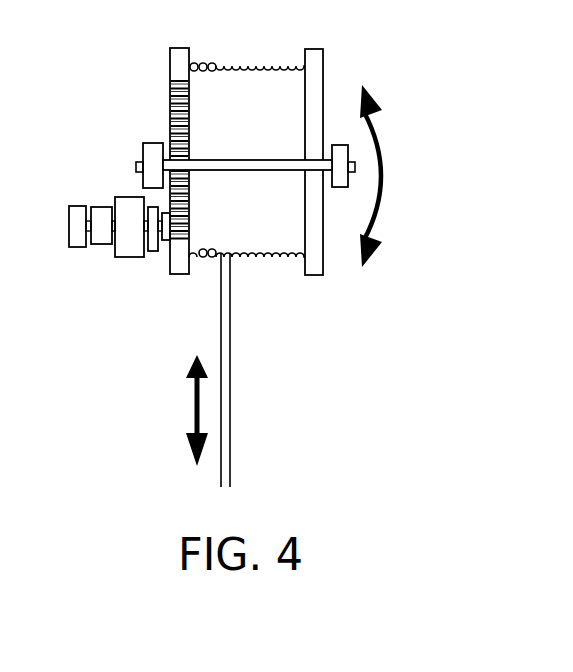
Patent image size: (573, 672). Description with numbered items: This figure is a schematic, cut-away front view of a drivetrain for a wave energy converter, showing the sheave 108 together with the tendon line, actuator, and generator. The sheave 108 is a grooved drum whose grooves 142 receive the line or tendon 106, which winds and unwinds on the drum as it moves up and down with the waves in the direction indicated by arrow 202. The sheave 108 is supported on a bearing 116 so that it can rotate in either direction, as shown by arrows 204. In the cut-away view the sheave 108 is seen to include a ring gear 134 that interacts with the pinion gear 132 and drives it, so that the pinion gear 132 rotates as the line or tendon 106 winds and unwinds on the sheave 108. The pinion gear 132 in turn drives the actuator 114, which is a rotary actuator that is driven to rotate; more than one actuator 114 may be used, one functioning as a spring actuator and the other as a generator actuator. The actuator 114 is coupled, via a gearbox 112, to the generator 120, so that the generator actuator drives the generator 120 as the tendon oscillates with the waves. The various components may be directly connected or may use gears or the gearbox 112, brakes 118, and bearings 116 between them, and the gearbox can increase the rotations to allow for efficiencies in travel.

The line or tendon 106 is at (214, 65).
The sheave 108 is at (323, 58).
The gearbox 112 is at (103, 236).
The actuator 114 is at (130, 200).
The bearing 116 is at (148, 144).
The brake 118 is at (152, 247).
The generator 120 is at (73, 207).
The pinion gear 132 is at (178, 243).
The ring gear 134 is at (187, 140).
The grooves 142 is at (280, 255).
The arrow 202 is at (194, 413).
The arrows 204 is at (372, 101).